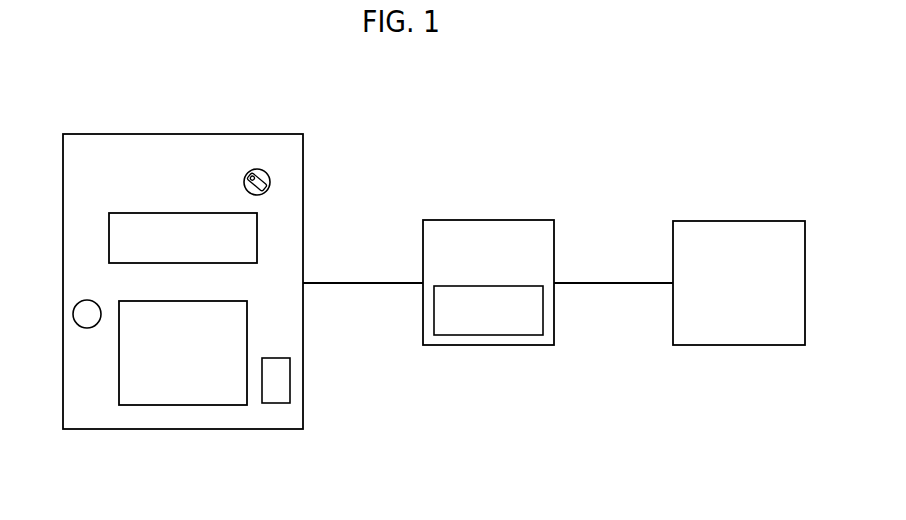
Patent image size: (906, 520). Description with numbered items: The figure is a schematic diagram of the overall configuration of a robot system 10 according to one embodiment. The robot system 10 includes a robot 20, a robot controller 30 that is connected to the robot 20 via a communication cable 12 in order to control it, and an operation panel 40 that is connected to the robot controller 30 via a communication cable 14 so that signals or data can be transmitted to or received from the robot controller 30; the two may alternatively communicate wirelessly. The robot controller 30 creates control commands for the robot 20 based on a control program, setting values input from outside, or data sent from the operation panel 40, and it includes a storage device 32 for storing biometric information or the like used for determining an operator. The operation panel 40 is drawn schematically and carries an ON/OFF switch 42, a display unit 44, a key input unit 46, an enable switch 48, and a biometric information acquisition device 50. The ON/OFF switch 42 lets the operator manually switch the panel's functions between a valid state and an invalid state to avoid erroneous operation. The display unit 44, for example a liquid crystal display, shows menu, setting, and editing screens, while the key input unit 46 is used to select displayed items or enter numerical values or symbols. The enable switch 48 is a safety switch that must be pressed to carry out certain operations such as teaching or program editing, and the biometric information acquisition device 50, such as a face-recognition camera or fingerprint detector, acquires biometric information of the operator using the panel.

The robot system 10 is at (390, 144).
The communication cable 12 is at (613, 280).
The communication cable 14 is at (363, 280).
The robot 20 is at (733, 220).
The robot controller 30 is at (492, 219).
The storage device 32 is at (507, 336).
The operation panel 40 is at (186, 133).
The ON/OFF switch 42 is at (251, 170).
The display unit 44 is at (109, 230).
The key input unit 46 is at (164, 406).
The enable switch 48 is at (290, 383).
The biometric information acquisition device 50 is at (73, 312).